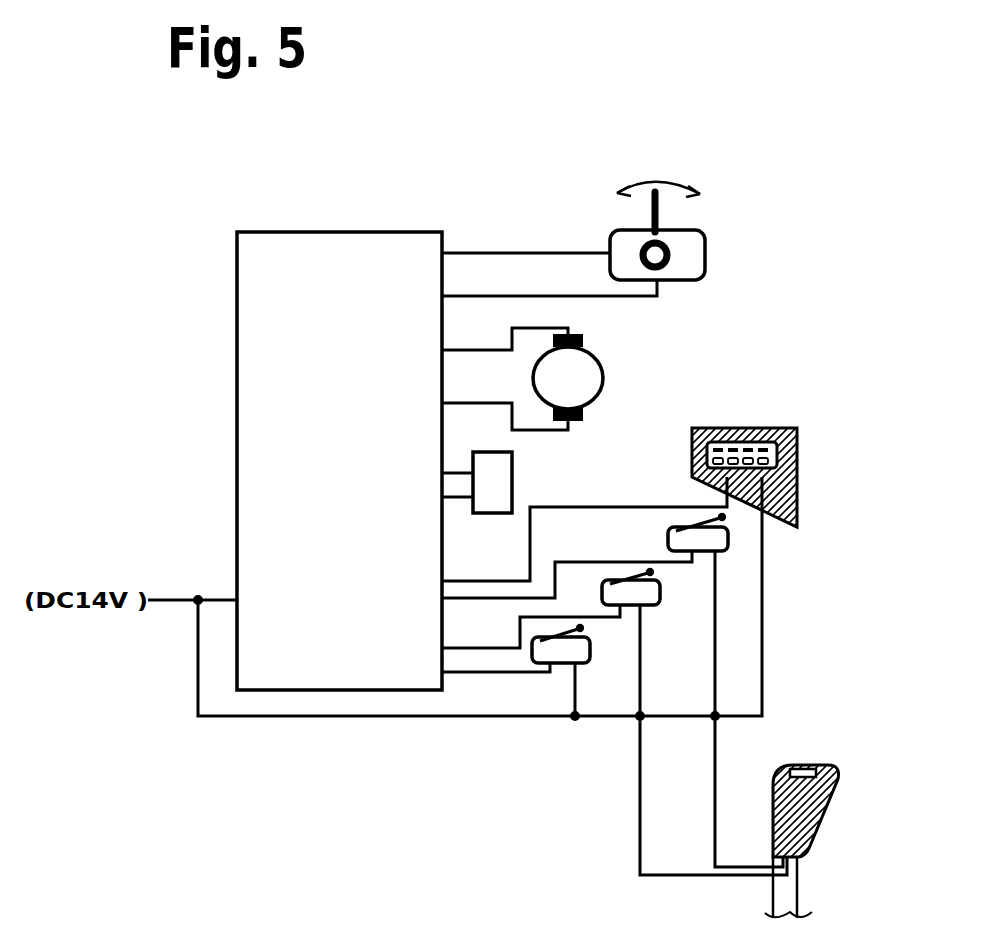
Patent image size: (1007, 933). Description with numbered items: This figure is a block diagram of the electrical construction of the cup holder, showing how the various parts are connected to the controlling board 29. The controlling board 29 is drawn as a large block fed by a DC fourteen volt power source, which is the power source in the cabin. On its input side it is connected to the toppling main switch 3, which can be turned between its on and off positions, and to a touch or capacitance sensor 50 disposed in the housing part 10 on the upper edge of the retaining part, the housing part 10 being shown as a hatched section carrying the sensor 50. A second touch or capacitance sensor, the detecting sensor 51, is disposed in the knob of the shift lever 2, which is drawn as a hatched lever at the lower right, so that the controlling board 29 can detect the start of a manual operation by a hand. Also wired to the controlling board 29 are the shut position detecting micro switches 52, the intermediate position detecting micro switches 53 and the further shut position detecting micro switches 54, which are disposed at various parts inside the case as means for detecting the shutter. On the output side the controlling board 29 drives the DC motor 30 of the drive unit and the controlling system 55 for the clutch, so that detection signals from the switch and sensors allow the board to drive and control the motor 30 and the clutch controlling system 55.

The controlling board 29 is at (326, 272).
The main switch 3 is at (690, 256).
The DC motor 30 is at (585, 378).
The controlling system for the clutch 55 is at (500, 478).
The housing part 10 is at (803, 444).
The sensor 50 is at (745, 441).
The shut position detecting micro switches 52 is at (730, 540).
The intermediate position detecting micro switches 53 is at (660, 594).
The shut position detecting micro switches 54 is at (590, 650).
The shift lever 2 is at (813, 826).
The detecting sensor 51 is at (803, 769).